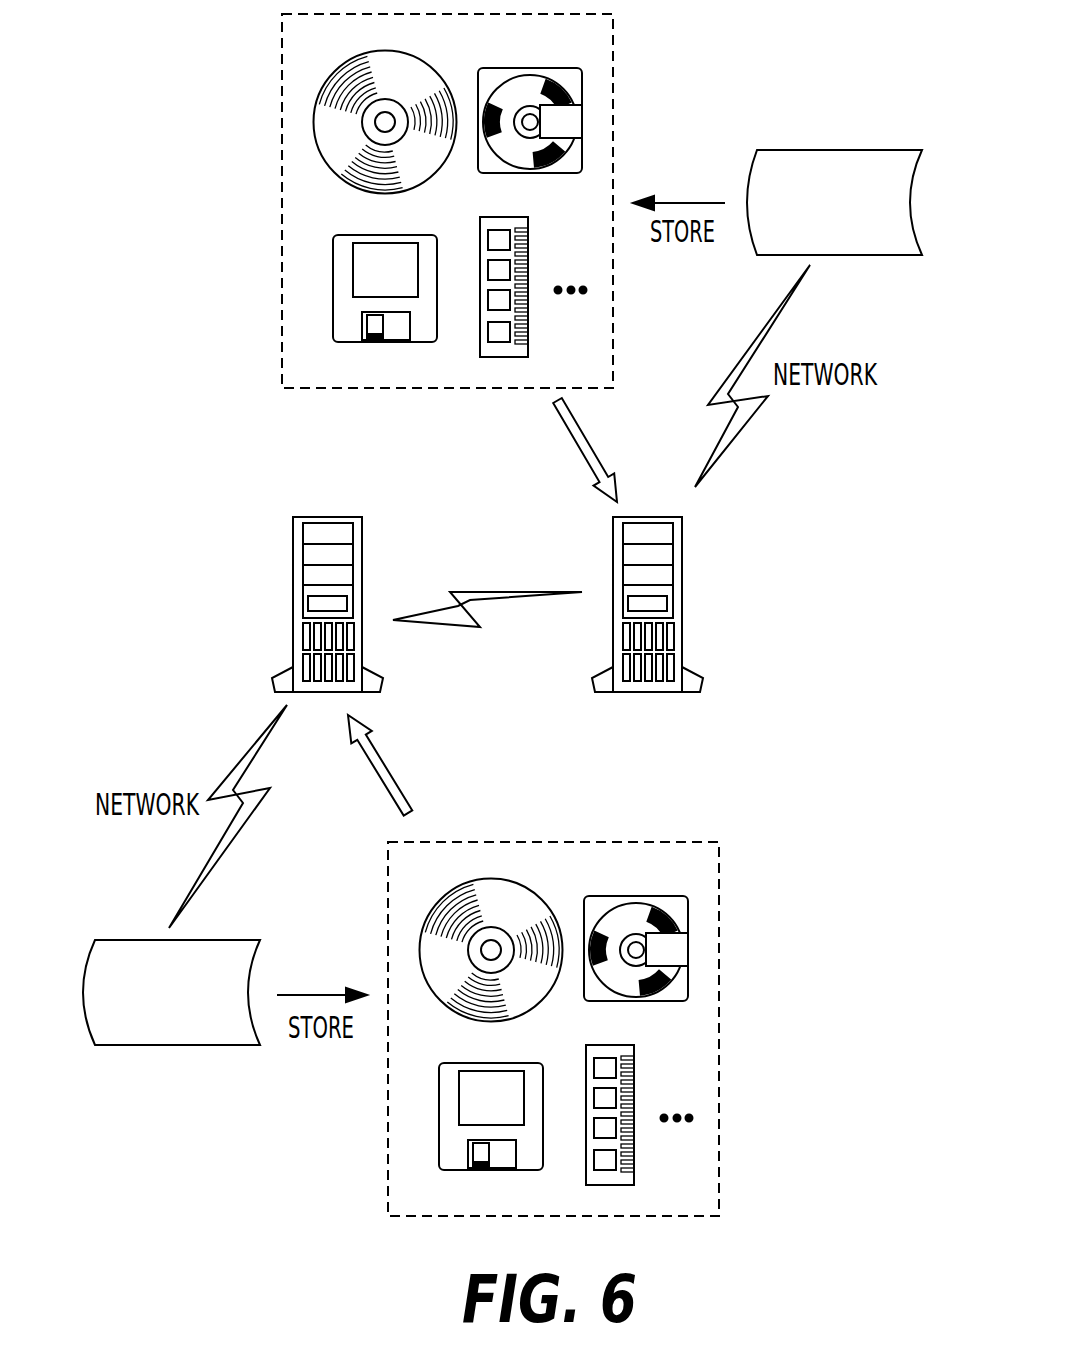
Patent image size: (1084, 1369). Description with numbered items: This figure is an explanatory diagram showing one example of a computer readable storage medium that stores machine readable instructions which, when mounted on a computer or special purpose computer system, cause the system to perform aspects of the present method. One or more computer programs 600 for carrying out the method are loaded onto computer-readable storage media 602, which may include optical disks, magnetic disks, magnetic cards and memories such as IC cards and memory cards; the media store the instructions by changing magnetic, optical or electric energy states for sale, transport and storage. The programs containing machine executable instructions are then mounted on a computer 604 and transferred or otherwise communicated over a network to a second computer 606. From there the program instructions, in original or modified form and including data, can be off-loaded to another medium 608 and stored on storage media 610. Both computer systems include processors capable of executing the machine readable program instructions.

The computer program 600 is at (223, 938).
The computer-readable storage media 602 is at (720, 923).
The computer 604 is at (343, 517).
The computer 606 is at (685, 567).
The medium 608 is at (825, 150).
The storage media 610 is at (613, 117).